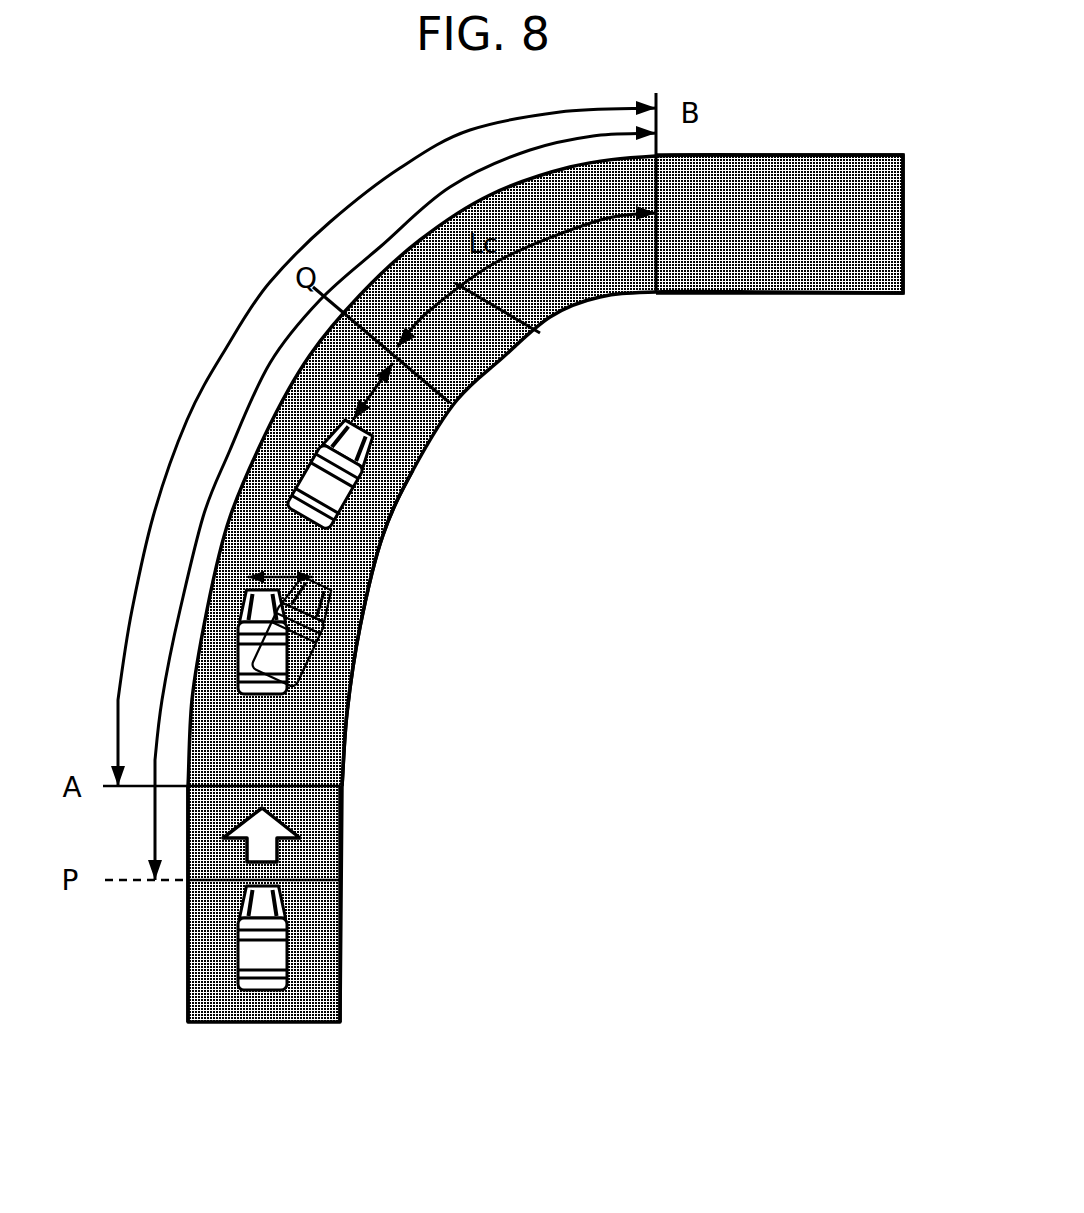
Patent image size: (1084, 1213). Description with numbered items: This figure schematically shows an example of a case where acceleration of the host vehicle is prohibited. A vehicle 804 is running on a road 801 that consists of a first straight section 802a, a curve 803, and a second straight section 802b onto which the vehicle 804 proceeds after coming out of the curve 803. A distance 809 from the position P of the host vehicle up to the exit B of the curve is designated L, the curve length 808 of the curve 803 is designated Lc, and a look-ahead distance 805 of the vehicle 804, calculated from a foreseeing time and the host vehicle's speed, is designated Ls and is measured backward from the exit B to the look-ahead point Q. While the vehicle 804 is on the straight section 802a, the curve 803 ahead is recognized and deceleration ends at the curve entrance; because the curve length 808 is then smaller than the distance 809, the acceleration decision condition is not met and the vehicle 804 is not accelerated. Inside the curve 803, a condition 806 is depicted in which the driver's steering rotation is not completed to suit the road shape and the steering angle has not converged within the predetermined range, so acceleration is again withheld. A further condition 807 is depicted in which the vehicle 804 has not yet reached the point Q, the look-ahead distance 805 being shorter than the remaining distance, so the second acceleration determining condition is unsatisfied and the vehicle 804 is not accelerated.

The road 801 is at (417, 468).
The straight section 802a is at (327, 867).
The straight section 802b is at (745, 295).
The curve 803 is at (340, 713).
The vehicle 804 is at (283, 957).
The look-ahead distance 805 is at (530, 333).
The condition 806 is at (327, 618).
The condition 807 is at (340, 523).
The curve length 808 is at (220, 357).
The distance 809 is at (183, 582).